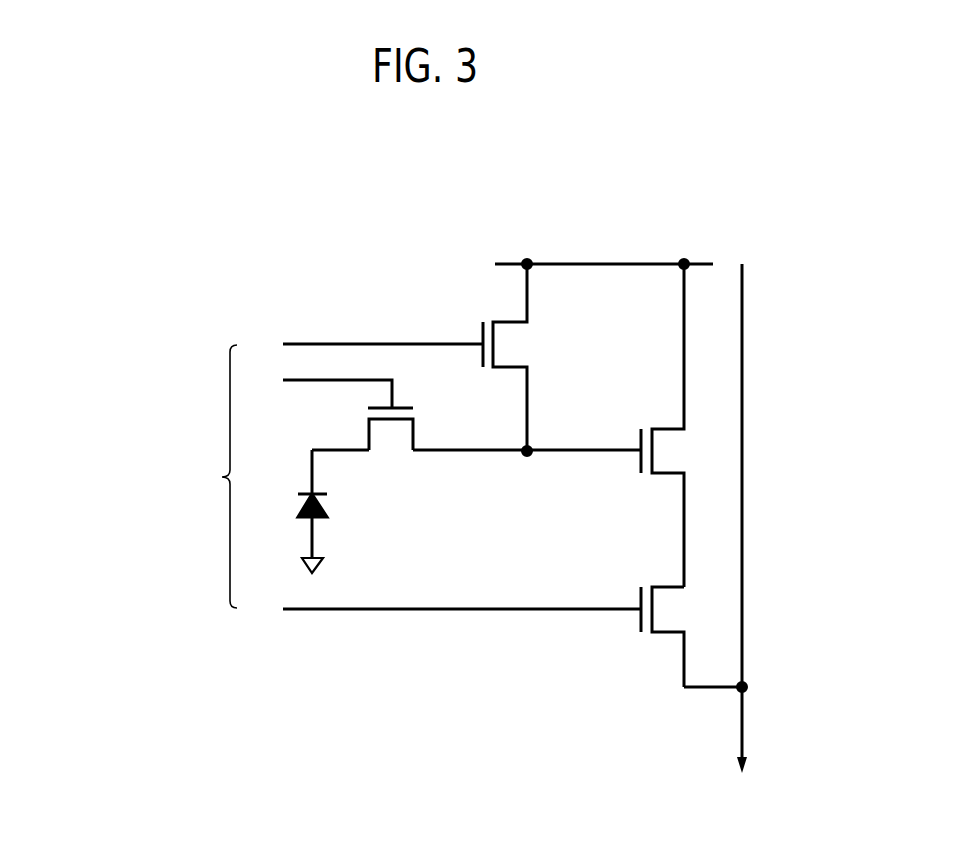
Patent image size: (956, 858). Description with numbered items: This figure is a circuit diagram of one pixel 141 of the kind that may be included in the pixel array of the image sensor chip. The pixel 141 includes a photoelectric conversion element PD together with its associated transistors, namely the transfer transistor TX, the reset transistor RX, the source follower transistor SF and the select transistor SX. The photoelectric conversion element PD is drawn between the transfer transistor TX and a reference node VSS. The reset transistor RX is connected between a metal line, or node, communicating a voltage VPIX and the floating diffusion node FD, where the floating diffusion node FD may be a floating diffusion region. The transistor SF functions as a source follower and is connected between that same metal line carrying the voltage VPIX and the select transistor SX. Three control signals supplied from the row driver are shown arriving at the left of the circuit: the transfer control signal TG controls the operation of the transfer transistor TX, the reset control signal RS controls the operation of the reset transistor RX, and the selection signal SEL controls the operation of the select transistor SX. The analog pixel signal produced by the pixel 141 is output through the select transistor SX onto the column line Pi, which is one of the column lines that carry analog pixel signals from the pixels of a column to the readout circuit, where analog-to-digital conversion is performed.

The pixel 141 is at (727, 193).
The voltage VPIX is at (579, 265).
The column line Pi is at (718, 534).
The reset transistor RX is at (519, 357).
The reset control signal RS is at (367, 345).
The floating diffusion node FD is at (527, 465).
The transfer control signal TG is at (321, 388).
The transfer transistor TX is at (362, 444).
The photoelectric conversion element PD is at (329, 504).
The ground voltage VSS is at (334, 568).
The source follower transistor SF is at (676, 425).
The select transistor SX is at (676, 637).
The selection signal SEL is at (441, 610).